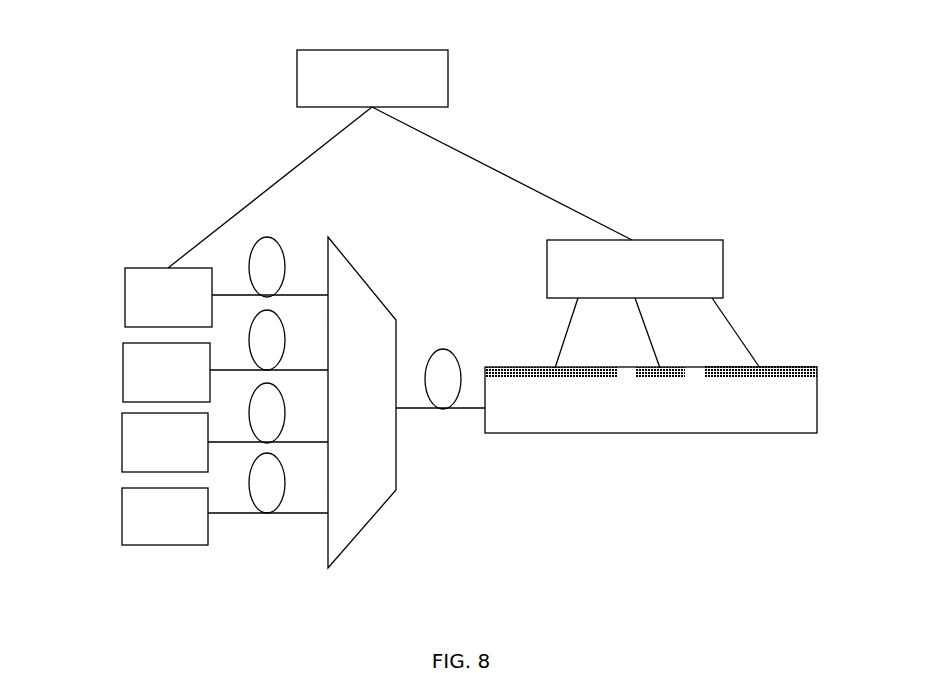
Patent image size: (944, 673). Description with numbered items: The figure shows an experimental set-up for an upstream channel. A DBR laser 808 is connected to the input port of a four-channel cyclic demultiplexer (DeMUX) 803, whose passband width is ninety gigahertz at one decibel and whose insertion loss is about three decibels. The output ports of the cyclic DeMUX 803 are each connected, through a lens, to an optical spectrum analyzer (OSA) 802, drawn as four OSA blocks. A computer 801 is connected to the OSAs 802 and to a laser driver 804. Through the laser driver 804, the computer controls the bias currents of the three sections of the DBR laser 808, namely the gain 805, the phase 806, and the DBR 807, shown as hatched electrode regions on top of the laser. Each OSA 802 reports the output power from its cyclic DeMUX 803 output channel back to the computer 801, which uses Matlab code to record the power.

The computer 801 is at (389, 50).
The optical spectrum analyzer 802 is at (122, 432).
The cyclic demultiplexer 803 is at (345, 535).
The laser driver 804 is at (697, 240).
The gain 805 is at (526, 410).
The phase 806 is at (648, 410).
The DBR bias current 807 is at (760, 412).
The DBR laser 808 is at (675, 427).